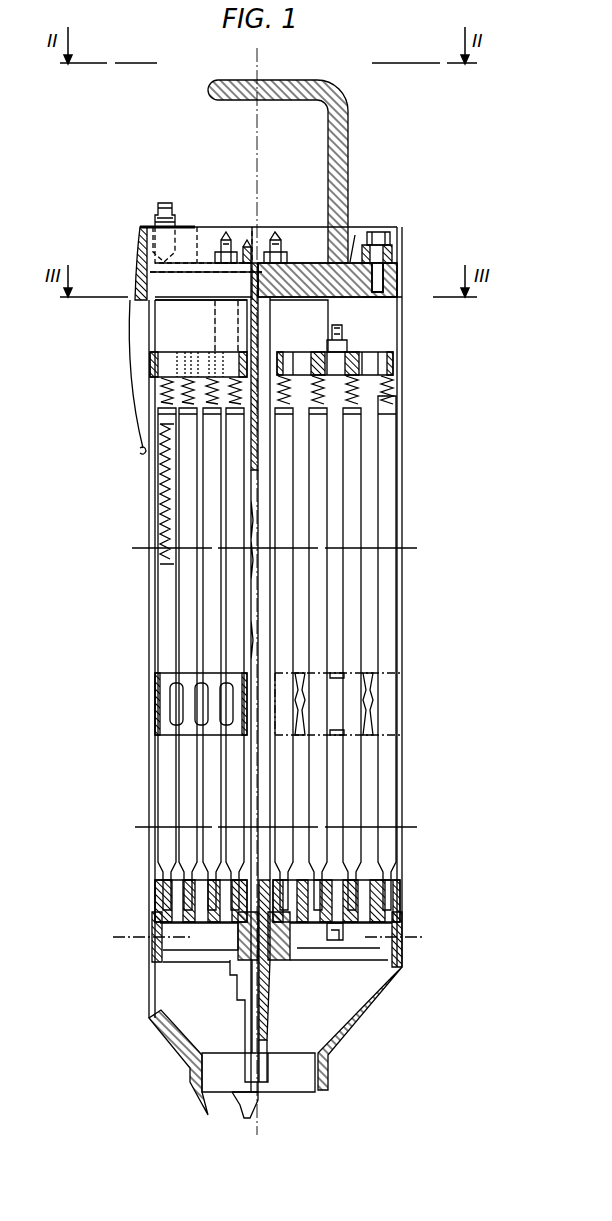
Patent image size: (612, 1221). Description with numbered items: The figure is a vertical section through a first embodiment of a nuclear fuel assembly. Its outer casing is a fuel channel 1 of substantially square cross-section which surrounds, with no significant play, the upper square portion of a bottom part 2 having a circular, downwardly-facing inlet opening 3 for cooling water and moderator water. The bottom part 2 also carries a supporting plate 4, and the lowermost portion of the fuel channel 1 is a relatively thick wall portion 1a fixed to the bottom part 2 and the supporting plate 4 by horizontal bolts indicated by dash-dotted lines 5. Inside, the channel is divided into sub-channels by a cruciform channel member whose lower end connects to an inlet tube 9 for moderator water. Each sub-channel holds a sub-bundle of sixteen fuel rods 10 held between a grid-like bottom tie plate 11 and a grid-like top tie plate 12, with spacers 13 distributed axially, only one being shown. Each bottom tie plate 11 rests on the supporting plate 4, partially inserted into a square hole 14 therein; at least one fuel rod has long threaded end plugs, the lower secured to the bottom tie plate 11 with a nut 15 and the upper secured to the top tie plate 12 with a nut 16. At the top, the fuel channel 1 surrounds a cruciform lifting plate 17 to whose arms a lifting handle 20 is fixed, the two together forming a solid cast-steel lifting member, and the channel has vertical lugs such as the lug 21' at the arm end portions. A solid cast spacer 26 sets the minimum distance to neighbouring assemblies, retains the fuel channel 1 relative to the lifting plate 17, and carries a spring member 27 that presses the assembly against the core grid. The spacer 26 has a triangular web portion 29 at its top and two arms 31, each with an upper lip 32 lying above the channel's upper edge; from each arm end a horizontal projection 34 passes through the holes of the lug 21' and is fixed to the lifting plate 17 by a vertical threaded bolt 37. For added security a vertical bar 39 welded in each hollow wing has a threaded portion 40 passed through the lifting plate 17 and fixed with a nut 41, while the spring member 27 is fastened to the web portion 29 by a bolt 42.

The fuel channel 1 is at (404, 600).
The thick wall portion 1a is at (404, 968).
The bottom part 2 is at (150, 1015).
The inlet opening 3 is at (295, 1075).
The supporting plate 4 is at (166, 955).
The horizontal bolts 5 is at (113, 940).
The inlet tube 9 is at (243, 1063).
The fuel rods 10 is at (356, 476).
The bottom tie plate 11 is at (160, 894).
The top tie plate 12 is at (165, 366).
The spacers 13 is at (168, 732).
The square hole 14 is at (313, 942).
The nut 15 is at (345, 942).
The nut 16 is at (344, 340).
The lifting plate 17 is at (316, 297).
The lifting handle 20 is at (323, 80).
The lug 21' is at (357, 249).
The spacer 26 is at (142, 322).
The spring member 27 is at (133, 282).
The web portion 29 is at (187, 242).
The arms 31 is at (243, 236).
The upper lip 32 is at (140, 230).
The projection 34 is at (393, 255).
The threaded bolt 37 is at (382, 278).
The vertical bar 39 is at (217, 332).
The threaded portion 40 is at (277, 238).
The nut 41 is at (226, 268).
The bolt 42 is at (155, 206).